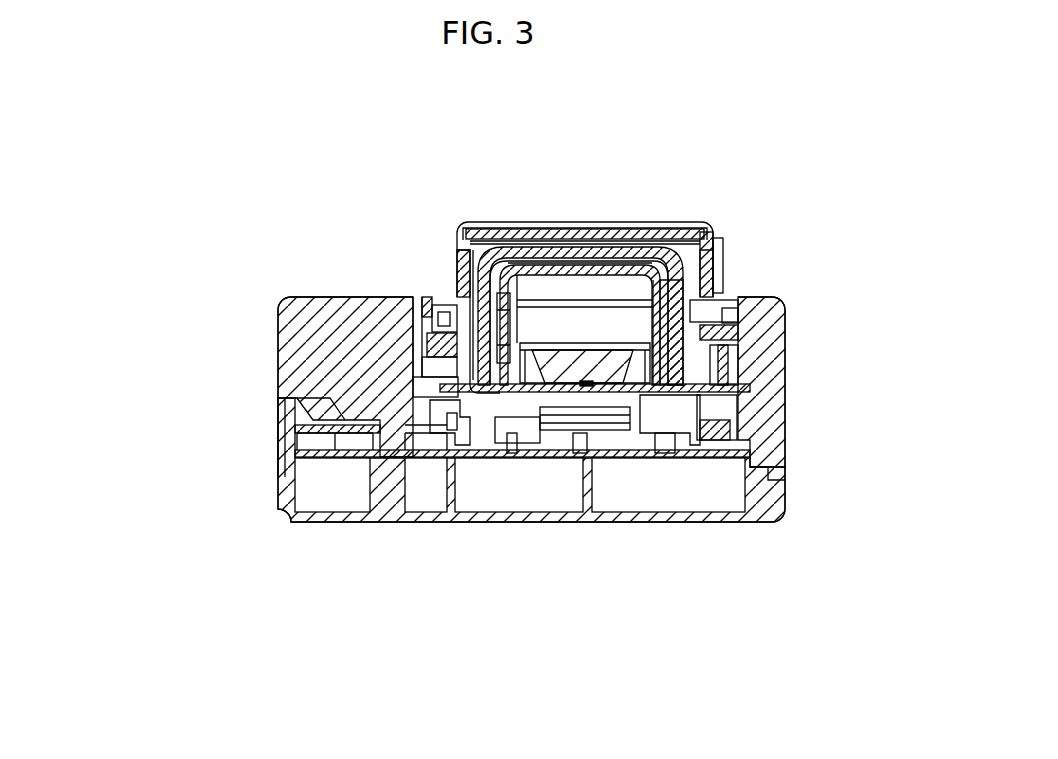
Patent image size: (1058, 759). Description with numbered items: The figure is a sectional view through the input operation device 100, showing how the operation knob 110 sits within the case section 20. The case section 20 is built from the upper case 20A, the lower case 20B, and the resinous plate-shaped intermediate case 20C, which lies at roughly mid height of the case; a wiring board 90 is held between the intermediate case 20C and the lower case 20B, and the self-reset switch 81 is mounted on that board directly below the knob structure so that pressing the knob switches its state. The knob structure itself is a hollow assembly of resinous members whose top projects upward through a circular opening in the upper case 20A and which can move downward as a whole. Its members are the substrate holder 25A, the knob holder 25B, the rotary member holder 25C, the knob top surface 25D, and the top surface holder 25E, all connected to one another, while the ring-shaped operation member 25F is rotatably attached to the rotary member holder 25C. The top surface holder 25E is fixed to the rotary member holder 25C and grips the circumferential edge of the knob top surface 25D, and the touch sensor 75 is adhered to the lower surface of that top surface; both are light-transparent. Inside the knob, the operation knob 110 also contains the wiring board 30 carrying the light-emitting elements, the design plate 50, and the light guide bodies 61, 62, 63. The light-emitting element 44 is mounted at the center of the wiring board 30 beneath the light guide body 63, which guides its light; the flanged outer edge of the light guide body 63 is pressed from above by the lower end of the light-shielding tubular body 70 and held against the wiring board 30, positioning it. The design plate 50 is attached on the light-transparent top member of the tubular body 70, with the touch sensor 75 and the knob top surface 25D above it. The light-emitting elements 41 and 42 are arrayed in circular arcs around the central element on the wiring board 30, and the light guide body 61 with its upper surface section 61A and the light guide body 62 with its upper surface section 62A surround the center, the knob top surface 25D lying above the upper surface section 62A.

The electroacoustic transducer 100 is at (750, 126).
The case section 20 is at (172, 385).
The upper case 20A is at (278, 387).
The lower case 20B is at (287, 497).
The intermediate case 20C is at (288, 430).
The wiring board 90 is at (343, 455).
The substrate holder 25A is at (660, 395).
The knob holder 25B is at (430, 343).
The rotary member holder 25C is at (457, 292).
The knob top surface 25D is at (552, 238).
The top surface holder 25E is at (466, 226).
The ring-shaped operation member 25F is at (457, 252).
The touch sensor 75 is at (593, 243).
The design plate 50 is at (608, 252).
The upper surface section 62A is at (638, 245).
The upper surface section 61A is at (668, 232).
The operation knob 110 is at (712, 226).
The light guide body 62 is at (700, 308).
The light guide body 61 is at (720, 316).
The light guide body 63 is at (556, 385).
The light-emitting element 44 is at (565, 358).
The self-reset switch 81 is at (576, 435).
The wiring board 30 is at (520, 363).
The tubular body 70 is at (487, 392).
The light-emitting element 42 is at (478, 410).
The light-emitting element 41 is at (686, 362).